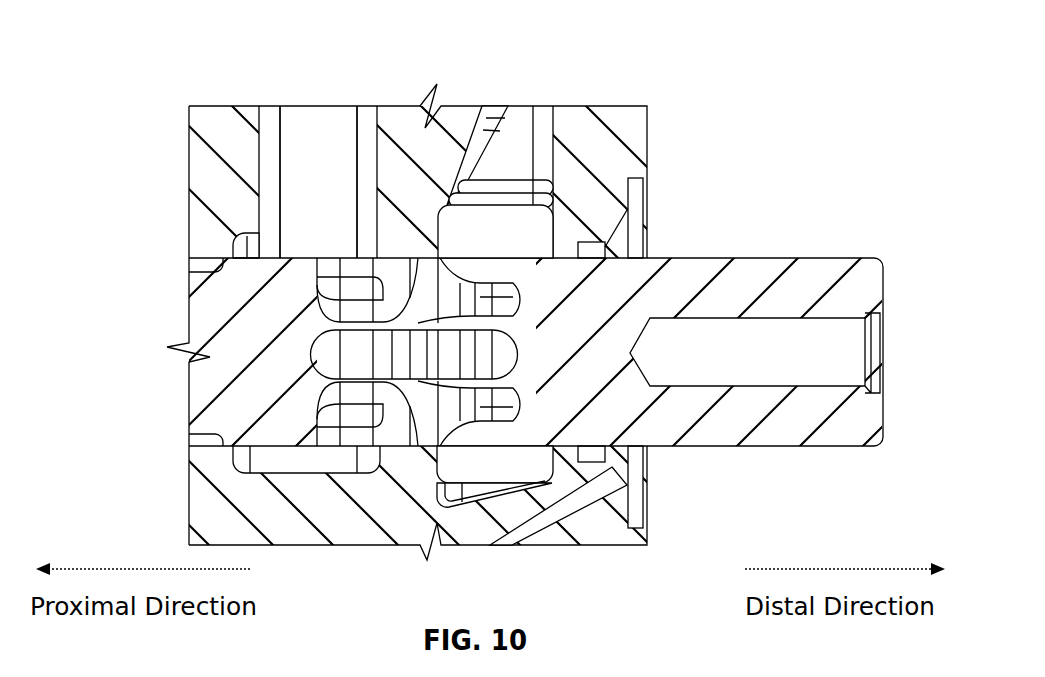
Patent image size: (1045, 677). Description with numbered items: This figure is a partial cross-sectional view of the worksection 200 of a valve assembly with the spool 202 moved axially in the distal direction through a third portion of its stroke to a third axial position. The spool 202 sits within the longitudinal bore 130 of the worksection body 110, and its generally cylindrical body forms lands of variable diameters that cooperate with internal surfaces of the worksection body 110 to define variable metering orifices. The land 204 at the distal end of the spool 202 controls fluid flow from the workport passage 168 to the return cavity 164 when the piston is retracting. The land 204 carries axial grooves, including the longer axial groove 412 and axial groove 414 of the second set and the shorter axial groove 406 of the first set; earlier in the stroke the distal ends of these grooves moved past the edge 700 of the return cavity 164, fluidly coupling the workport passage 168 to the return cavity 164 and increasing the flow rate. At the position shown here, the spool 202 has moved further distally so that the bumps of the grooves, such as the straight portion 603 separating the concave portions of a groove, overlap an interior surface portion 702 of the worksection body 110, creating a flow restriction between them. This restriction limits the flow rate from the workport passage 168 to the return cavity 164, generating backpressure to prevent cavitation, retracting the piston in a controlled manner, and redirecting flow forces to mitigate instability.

The worksection 200 is at (228, 128).
The worksection body 110 is at (189, 178).
The longitudinal bore 130 is at (201, 265).
The interior surface portion 702 is at (417, 266).
The axial groove 414 is at (350, 278).
The workport passage 168 is at (323, 160).
The straight portion 603 is at (428, 280).
The edge 700 is at (440, 245).
The spool 202 is at (740, 258).
The land 204 is at (722, 423).
The axial groove 412 is at (352, 422).
The axial groove 406 is at (427, 358).
The return cavity 164 is at (500, 462).